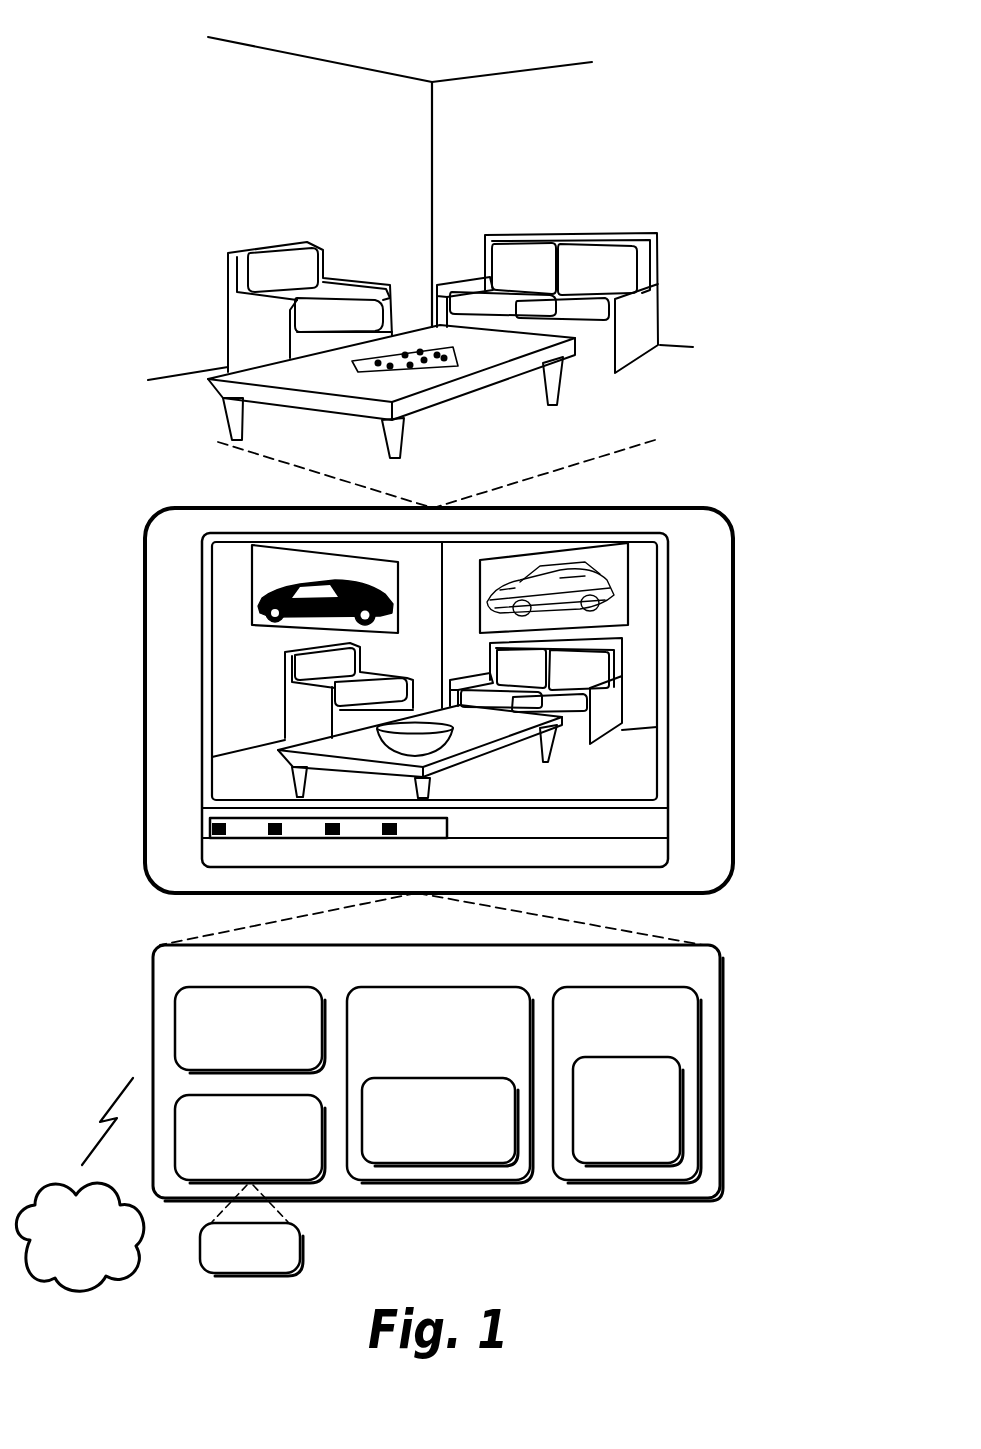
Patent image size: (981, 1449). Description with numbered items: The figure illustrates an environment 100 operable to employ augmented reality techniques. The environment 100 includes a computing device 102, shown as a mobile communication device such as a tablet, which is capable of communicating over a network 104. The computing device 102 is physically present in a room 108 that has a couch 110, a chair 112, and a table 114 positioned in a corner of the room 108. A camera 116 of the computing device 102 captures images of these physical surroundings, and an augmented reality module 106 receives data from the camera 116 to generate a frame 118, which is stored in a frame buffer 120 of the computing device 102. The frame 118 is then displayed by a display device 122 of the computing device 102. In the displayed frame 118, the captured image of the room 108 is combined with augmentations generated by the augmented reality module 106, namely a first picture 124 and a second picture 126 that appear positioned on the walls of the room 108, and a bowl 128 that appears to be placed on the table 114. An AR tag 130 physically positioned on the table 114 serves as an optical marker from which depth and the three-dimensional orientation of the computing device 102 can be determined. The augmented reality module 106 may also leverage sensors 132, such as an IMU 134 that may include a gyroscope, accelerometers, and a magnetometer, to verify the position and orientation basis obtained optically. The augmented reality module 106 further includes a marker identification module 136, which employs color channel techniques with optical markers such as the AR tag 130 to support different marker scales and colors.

The environment 100 is at (137, 63).
The computing device 102 is at (545, 976).
The network 104 is at (93, 1257).
The augmented reality module 106 is at (456, 1072).
The room 108 is at (642, 140).
The couch 110 is at (658, 233).
The chair 112 is at (310, 240).
The table 114 is at (353, 418).
The camera 116 is at (309, 1038).
The frame 118 is at (644, 1130).
The frame buffer 120 is at (677, 1045).
The display device 122 is at (647, 791).
The first picture 124 is at (283, 543).
The second picture 126 is at (583, 543).
The bowl 128 is at (447, 740).
The AR tag 130 is at (461, 354).
The sensors 132 is at (310, 1148).
The IMU 134 is at (291, 1257).
The marker identification module 136 is at (495, 1157).